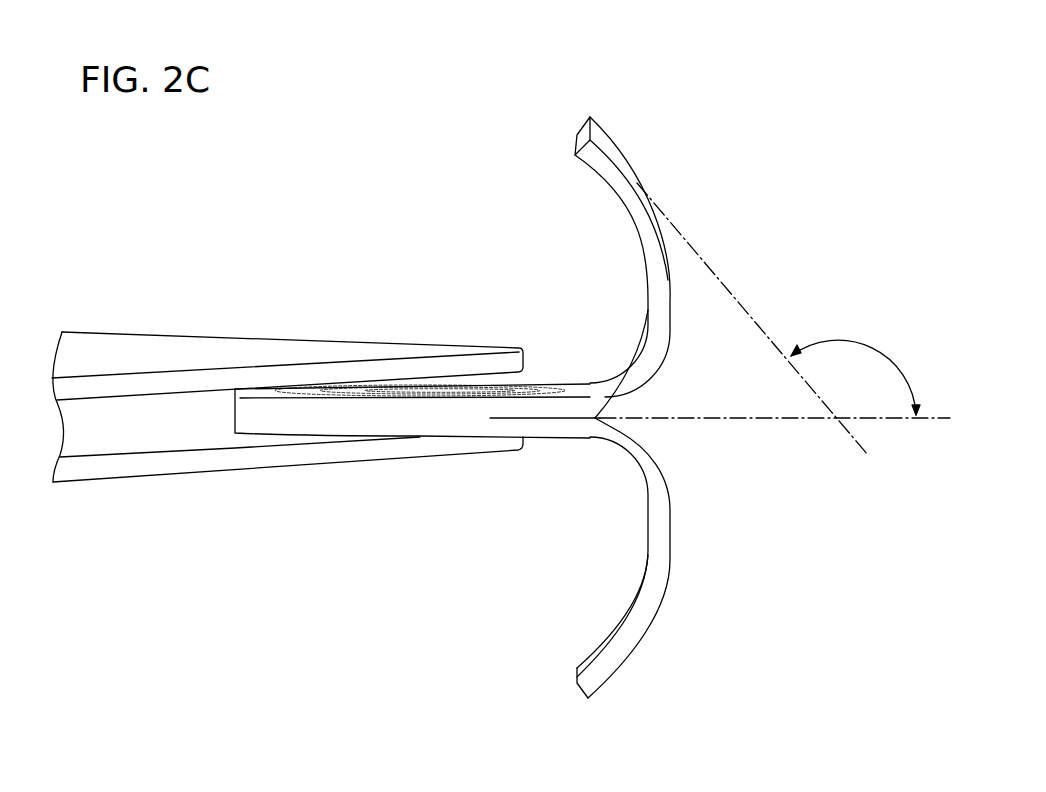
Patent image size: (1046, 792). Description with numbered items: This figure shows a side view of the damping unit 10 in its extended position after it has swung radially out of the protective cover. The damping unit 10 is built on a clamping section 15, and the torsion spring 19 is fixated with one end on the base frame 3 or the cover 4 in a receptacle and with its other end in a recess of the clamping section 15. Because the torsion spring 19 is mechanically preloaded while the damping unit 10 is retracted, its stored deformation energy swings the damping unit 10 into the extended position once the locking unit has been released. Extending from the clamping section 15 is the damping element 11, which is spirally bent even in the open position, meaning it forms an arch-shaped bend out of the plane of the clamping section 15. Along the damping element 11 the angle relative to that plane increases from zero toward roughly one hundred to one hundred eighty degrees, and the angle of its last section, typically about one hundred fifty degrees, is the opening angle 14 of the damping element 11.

The base frame 3 is at (216, 462).
The cover 4 is at (218, 352).
The damping unit 10 is at (767, 553).
The damping element 11 is at (668, 162).
The opening angle 14 is at (887, 352).
The clamping section 15 is at (380, 418).
The torsion spring 19 is at (380, 383).